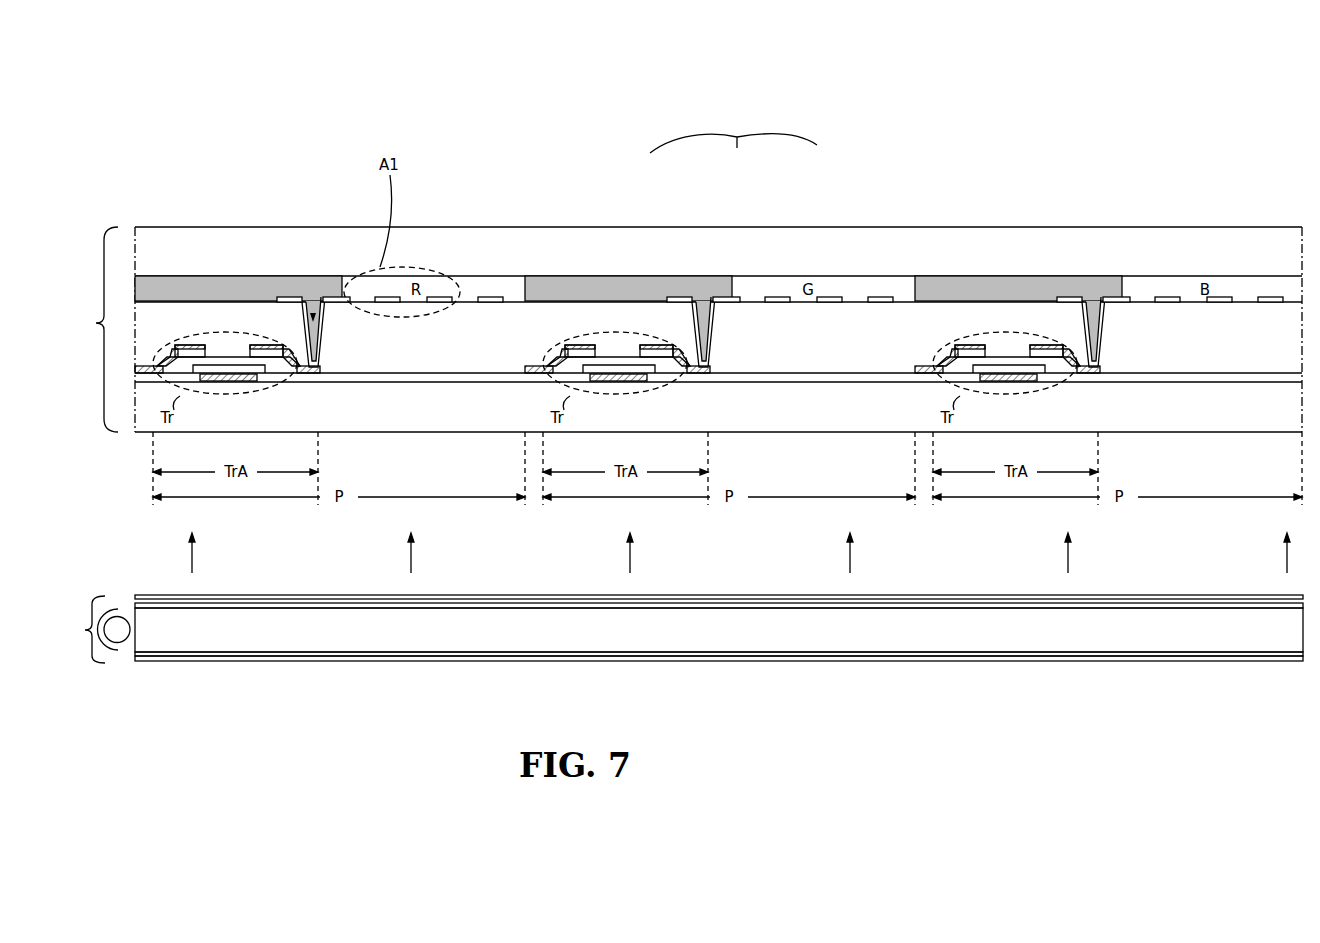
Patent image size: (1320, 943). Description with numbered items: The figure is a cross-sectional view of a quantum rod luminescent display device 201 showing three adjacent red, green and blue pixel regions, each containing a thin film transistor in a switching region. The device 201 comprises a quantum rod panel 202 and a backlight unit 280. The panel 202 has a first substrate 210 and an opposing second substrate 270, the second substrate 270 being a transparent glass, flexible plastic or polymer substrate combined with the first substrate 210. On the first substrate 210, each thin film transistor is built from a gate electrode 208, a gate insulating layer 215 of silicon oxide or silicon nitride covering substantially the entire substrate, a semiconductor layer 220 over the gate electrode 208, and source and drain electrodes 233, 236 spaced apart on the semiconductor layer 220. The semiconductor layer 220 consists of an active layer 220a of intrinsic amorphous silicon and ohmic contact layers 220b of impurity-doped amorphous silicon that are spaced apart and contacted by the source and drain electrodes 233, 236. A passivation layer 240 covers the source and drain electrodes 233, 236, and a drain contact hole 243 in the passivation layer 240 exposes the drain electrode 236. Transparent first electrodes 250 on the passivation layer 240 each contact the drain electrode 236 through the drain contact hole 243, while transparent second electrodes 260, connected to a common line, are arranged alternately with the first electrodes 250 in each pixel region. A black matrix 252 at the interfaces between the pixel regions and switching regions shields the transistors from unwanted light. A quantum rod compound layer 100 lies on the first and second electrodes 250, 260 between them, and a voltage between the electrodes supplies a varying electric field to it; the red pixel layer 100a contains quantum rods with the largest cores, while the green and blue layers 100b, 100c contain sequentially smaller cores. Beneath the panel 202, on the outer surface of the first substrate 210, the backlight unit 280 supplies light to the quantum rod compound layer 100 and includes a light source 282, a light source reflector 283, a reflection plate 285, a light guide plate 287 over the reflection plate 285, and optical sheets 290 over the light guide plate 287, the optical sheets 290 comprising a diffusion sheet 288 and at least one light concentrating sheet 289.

The quantum rod compound layer 100 is at (733, 134).
The quantum rod compound layer 100a is at (503, 285).
The quantum rod compound layer 100b is at (763, 283).
The quantum rod compound layer 100c is at (1133, 285).
The quantum rod luminescent display device 201 is at (1190, 178).
The quantum rod panel 202 is at (96, 323).
The gate electrode 208 is at (222, 382).
The first substrate 210 is at (1257, 414).
The gate insulating layer 215 is at (373, 378).
The semiconductor layer 220 is at (618, 404).
The active layer 220a is at (258, 368).
The ohmic contact layers 220b is at (293, 365).
The source electrode 233 is at (192, 344).
The drain electrode 236 is at (260, 344).
The passivation layer 240 is at (470, 356).
The drain contact hole 243 is at (312, 313).
The first electrodes 250 is at (338, 303).
The black matrix 252 is at (215, 282).
The second electrodes 260 is at (388, 303).
The second substrate 270 is at (1257, 262).
The backlight unit 280 is at (673, 620).
The light source 282 is at (119, 640).
The light source reflector 283 is at (112, 653).
The reflection plate 285 is at (372, 660).
The light guide plate 287 is at (430, 636).
The diffusion sheet 288 is at (588, 549).
The light concentrating sheet 289 is at (595, 595).
The optical sheets 290 is at (719, 567).